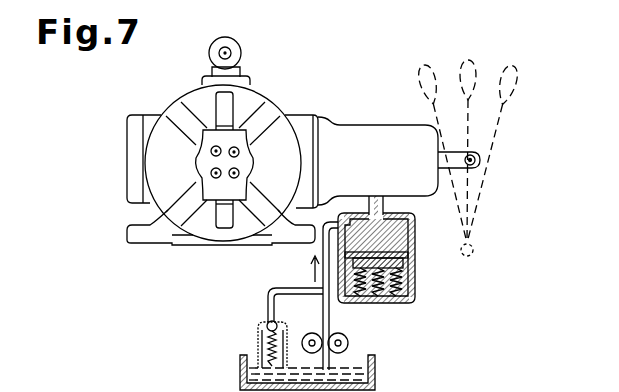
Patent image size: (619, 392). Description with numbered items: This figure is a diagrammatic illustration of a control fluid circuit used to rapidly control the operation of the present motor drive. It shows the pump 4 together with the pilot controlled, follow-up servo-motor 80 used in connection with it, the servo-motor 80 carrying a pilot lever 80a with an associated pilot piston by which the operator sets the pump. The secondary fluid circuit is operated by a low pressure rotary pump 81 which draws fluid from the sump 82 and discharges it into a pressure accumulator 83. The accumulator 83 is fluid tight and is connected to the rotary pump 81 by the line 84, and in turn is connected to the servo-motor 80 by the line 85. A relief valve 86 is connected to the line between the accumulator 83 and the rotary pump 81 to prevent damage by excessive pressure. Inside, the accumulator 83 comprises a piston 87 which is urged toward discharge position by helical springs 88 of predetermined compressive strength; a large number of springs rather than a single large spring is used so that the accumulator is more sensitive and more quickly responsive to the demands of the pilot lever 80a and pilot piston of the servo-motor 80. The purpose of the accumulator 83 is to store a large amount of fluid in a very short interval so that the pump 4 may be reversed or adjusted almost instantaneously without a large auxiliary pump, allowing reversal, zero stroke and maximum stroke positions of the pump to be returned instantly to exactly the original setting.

The pump 4 is at (254, 103).
The servo-motor 80 is at (343, 135).
The pilot lever 80a is at (452, 153).
The line 85 is at (387, 210).
The pressure accumulator 83 is at (412, 281).
The piston 87 is at (409, 262).
The helical springs 88 is at (402, 291).
The line 84 is at (330, 314).
The relief valve 86 is at (258, 336).
The low pressure rotary pump 81 is at (349, 343).
The sump 82 is at (376, 370).